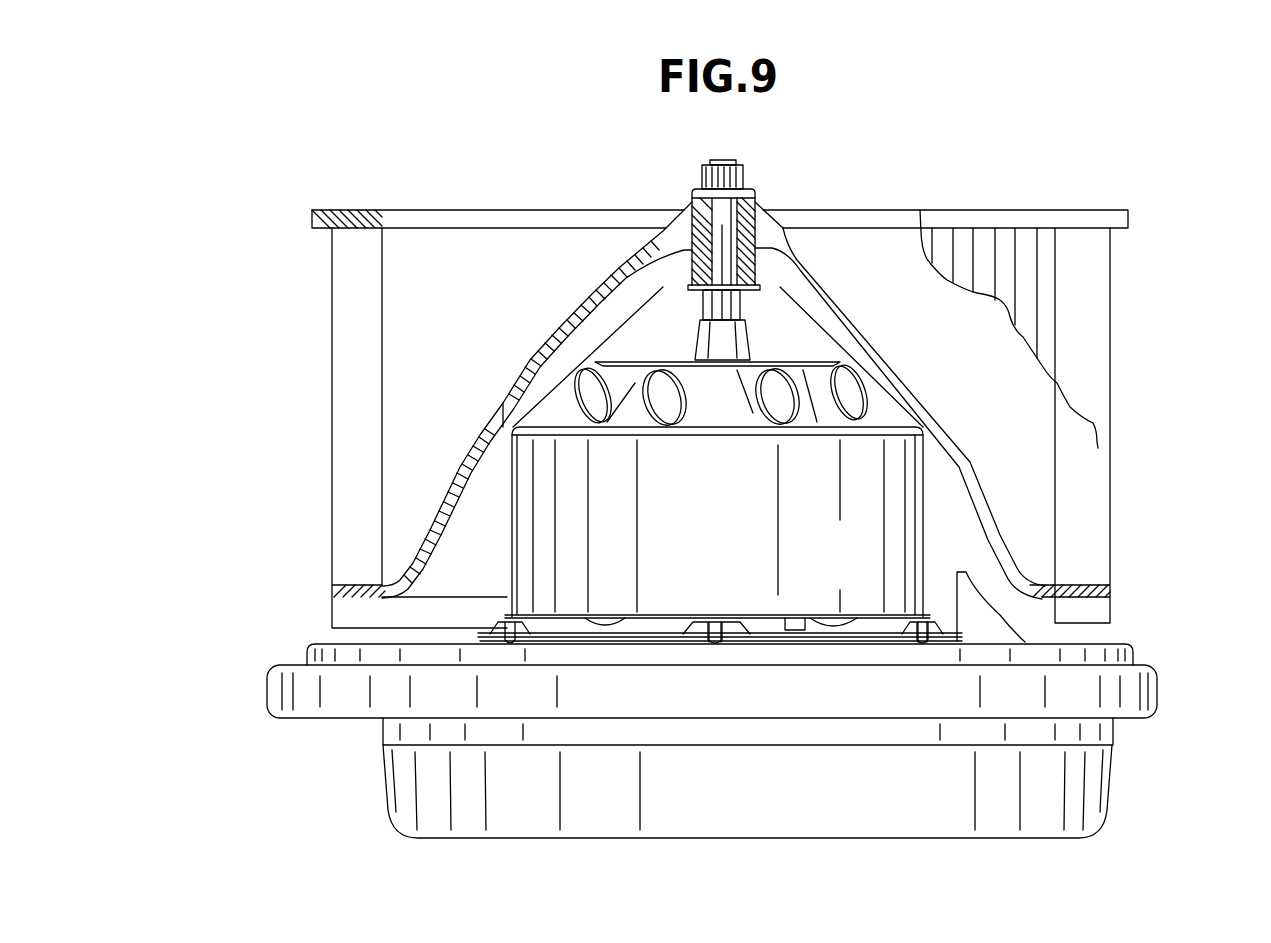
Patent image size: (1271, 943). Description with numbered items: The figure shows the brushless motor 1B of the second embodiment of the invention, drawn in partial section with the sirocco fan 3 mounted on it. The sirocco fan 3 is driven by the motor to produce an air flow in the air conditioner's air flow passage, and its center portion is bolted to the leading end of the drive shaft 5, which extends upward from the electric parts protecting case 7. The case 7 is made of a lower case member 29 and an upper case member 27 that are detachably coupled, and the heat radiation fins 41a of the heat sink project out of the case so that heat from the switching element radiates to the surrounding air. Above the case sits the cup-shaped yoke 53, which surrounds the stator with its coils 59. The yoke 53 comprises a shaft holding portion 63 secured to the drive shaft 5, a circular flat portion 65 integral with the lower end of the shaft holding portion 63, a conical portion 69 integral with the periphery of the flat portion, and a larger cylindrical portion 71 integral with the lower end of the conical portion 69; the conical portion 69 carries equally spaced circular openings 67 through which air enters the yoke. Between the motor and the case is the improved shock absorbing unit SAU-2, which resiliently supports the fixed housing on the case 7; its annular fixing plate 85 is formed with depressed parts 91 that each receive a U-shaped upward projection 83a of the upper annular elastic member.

The brushless motor 1B is at (795, 188).
The sirocco fan 3 is at (1030, 222).
The drive shaft 5 is at (700, 318).
The shaft holding portion 63 is at (752, 335).
The circular flat portion 65 is at (812, 358).
The conical portion 69 is at (868, 388).
The circular openings 67 is at (772, 414).
The yoke 53 is at (938, 438).
The larger cylindrical portion 71 is at (915, 545).
The coil 59 is at (607, 620).
The annular fixing plate 85 is at (673, 622).
The depressed part 91 is at (505, 621).
The upward projections 83a is at (722, 645).
The heat radiation fins 41a is at (965, 585).
The shock absorbing unit SAU-2 is at (478, 612).
The electric parts protecting case 7 is at (755, 741).
The upper case member 27 is at (1108, 732).
The lower case member 29 is at (1106, 784).